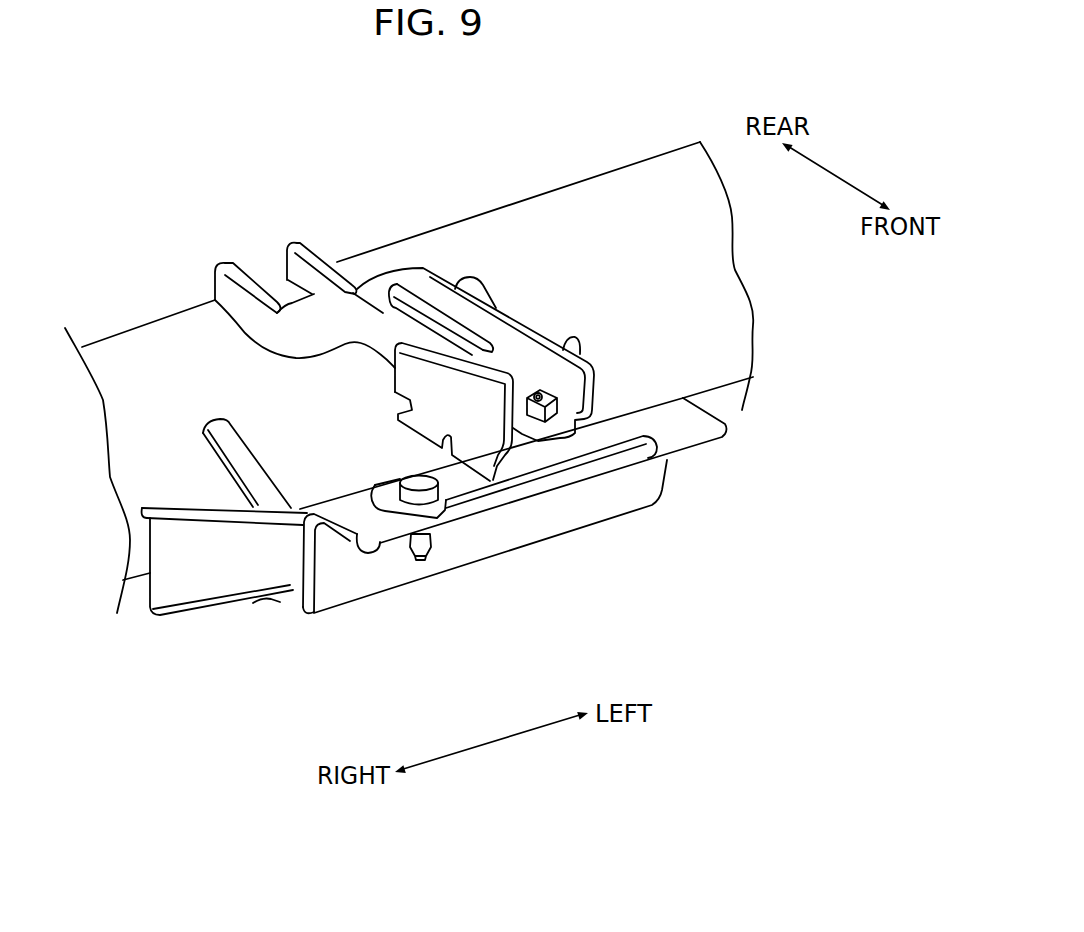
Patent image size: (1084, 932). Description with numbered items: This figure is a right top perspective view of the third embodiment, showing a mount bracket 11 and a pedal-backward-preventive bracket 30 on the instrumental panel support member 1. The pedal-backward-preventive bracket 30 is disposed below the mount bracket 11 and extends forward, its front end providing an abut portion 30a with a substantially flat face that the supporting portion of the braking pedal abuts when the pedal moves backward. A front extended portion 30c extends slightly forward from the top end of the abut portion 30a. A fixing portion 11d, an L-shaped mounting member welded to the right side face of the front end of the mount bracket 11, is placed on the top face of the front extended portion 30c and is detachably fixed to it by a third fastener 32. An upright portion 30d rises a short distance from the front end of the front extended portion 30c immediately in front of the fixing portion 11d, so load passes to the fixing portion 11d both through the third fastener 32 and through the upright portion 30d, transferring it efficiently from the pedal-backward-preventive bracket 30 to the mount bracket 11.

The instrumental panel support member 1 is at (548, 200).
The mount bracket 11 is at (420, 272).
The fixing portion 11d is at (495, 437).
The pedal-backward-preventive bracket 30 is at (434, 544).
The abut portion 30a is at (386, 577).
The front extended portion 30c is at (347, 540).
The upright portion 30d is at (616, 470).
The third fastener 32 is at (427, 550).